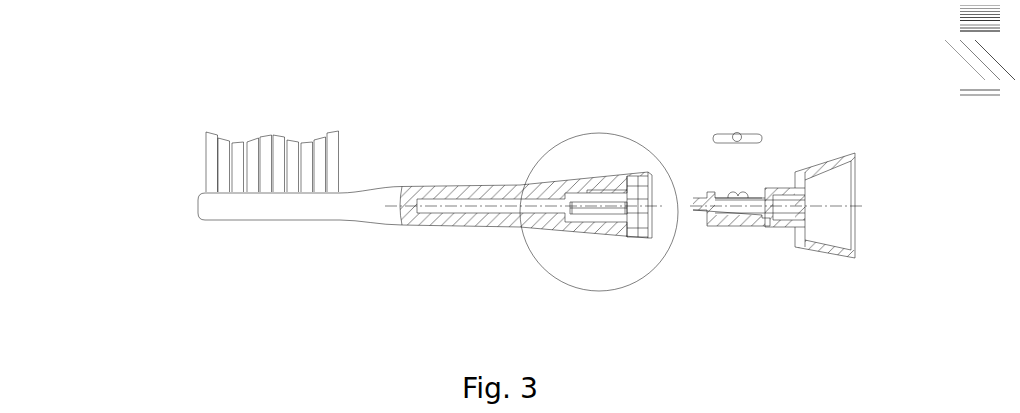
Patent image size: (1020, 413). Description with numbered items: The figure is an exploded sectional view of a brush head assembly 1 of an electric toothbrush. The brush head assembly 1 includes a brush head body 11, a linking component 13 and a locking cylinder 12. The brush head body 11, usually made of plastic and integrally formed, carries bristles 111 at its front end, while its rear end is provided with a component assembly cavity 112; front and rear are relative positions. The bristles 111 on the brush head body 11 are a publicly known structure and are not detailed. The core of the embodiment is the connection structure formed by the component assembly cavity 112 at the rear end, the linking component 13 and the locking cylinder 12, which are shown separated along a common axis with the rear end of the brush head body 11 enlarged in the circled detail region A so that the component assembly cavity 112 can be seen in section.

The brush head assembly 1 is at (158, 110).
The brush head body 11 is at (421, 171).
The bristles 111 is at (321, 140).
The component assembly cavity 112 is at (603, 213).
The locking cylinder 12 is at (754, 127).
The linking component 13 is at (854, 156).
The detail region A is at (599, 132).